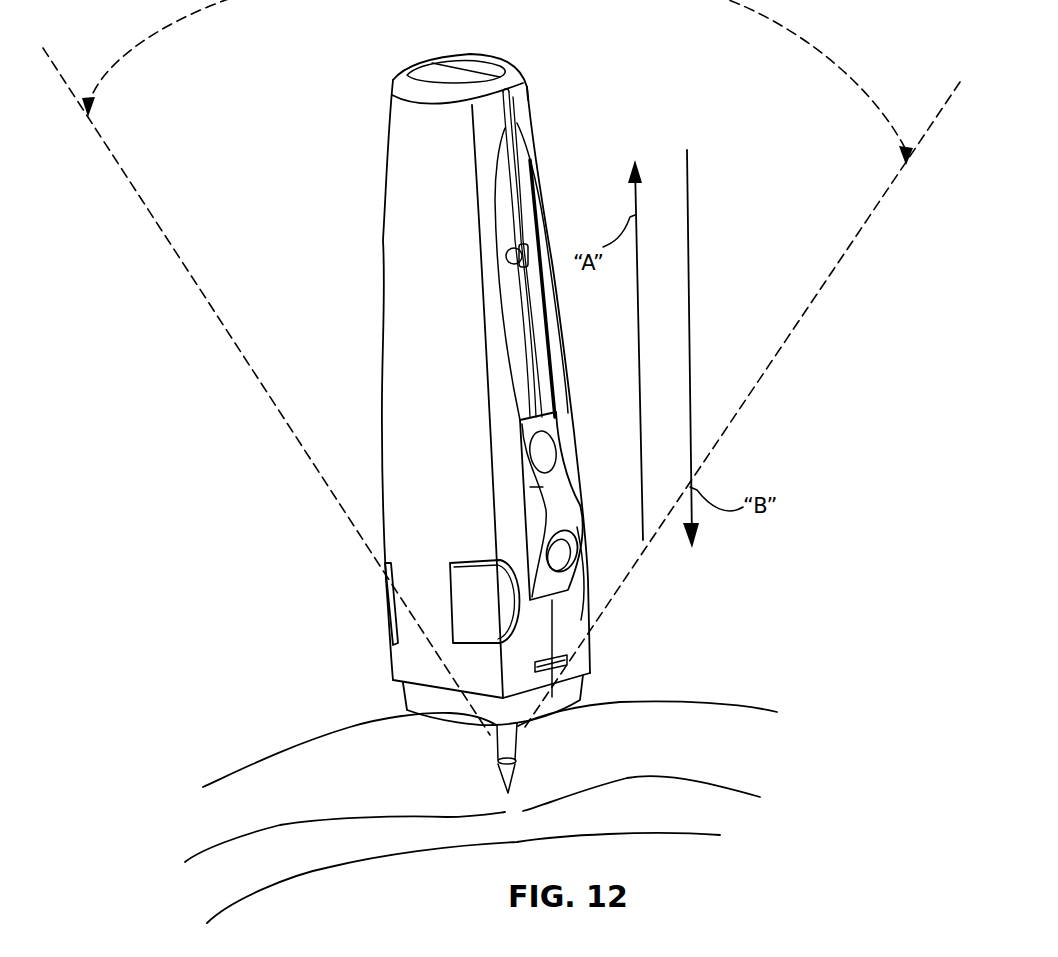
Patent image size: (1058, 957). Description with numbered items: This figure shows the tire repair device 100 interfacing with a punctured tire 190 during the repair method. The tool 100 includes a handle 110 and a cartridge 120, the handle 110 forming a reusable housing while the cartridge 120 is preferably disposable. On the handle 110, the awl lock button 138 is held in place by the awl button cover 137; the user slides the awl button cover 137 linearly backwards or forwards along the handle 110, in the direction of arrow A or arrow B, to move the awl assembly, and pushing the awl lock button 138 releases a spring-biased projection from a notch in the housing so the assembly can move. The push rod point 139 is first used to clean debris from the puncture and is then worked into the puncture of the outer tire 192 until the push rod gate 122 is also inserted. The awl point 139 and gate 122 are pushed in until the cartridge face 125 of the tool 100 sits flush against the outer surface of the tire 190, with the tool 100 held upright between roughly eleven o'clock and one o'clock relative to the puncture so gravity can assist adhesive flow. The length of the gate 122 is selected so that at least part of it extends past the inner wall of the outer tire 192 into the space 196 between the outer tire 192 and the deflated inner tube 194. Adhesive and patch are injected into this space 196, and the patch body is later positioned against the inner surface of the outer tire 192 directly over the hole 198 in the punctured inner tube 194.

The tire repair device 100 is at (362, 106).
The handle 110 is at (450, 173).
The cartridge 120 is at (388, 592).
The push rod gate 122 is at (493, 747).
The cartridge face 125 is at (450, 717).
The awl button cover 137 is at (543, 487).
The awl lock button 138 is at (553, 558).
The push rod point 139 is at (513, 788).
The tire 190 is at (218, 683).
The outer tire 192 is at (217, 784).
The inner tube 194 is at (281, 827).
The space 196 is at (460, 794).
The hole 198 is at (520, 828).